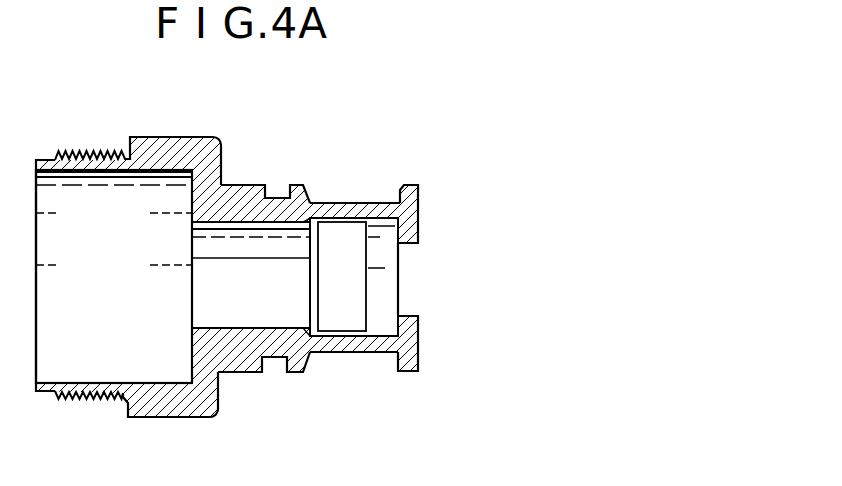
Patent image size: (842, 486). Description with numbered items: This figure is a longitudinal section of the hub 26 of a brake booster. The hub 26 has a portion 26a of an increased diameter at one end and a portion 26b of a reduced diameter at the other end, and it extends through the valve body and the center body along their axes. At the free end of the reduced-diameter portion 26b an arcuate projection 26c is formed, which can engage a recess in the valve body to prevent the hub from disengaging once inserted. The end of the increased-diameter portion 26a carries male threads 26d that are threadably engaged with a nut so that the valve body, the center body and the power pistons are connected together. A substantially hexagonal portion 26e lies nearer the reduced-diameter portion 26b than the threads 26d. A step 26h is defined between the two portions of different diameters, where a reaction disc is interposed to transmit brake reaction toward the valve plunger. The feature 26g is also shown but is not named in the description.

The hub 26 is at (164, 123).
The portion of an increased diameter 26a is at (145, 418).
The portion of a reduced diameter 26b is at (346, 202).
The arcuate projection 26c is at (408, 190).
The male threads 26d is at (75, 399).
The hexagonal portion 26e is at (195, 418).
The flange 26g is at (224, 157).
The step 26h is at (192, 198).